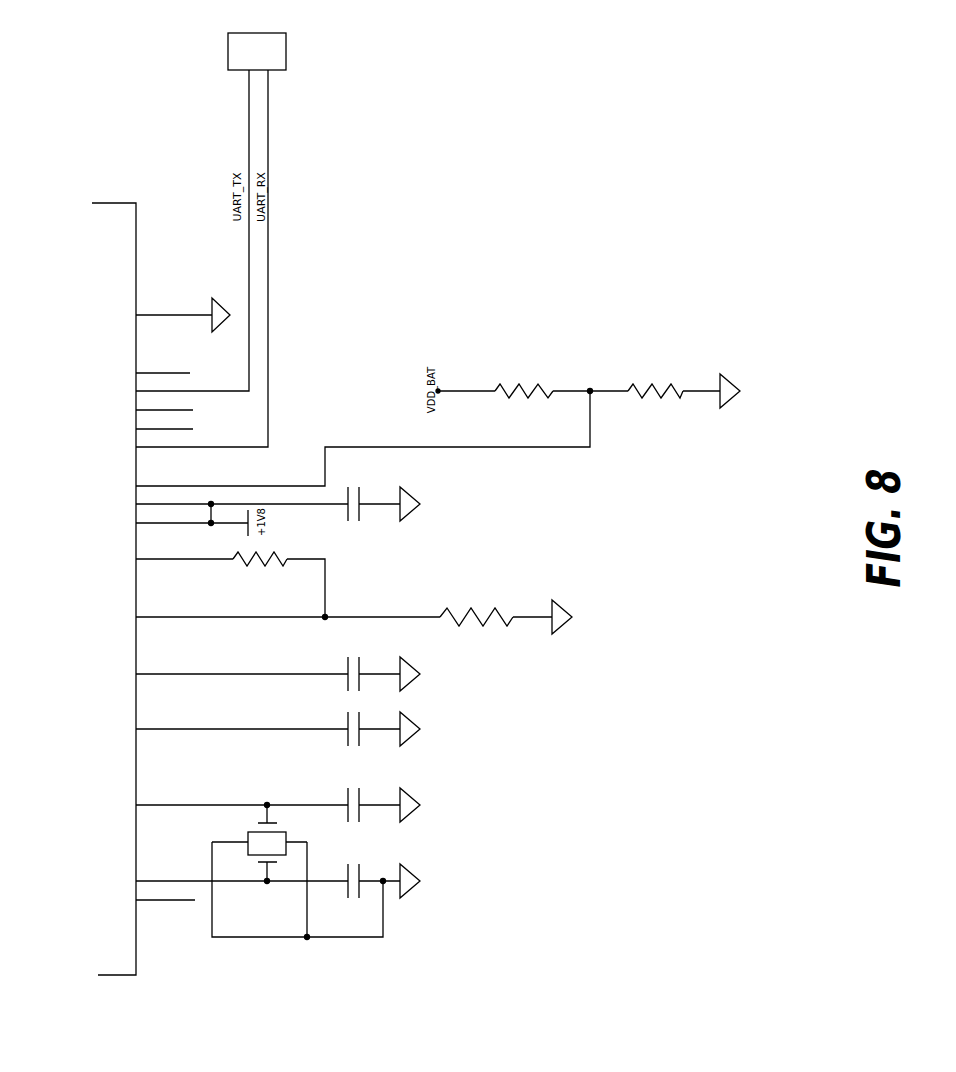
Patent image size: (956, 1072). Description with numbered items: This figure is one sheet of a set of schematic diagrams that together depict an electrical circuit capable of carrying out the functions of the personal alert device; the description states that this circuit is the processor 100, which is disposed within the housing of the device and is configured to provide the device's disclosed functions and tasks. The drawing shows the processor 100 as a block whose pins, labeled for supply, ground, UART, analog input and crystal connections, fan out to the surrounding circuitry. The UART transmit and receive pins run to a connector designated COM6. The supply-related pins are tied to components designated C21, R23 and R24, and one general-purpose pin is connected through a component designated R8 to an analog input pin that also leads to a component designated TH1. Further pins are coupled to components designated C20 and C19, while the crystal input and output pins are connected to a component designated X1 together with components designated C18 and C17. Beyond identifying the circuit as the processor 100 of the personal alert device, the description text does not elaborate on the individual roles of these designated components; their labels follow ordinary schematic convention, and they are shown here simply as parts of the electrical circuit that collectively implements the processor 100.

The processor 100 is at (295, 522).
The UART connector COM6 is at (241, 59).
The capacitor C21 is at (373, 492).
The resistor R23 is at (524, 363).
The resistor R24 is at (655, 363).
The resistor R8 is at (260, 576).
The thermistor TH1 is at (476, 618).
The capacitor C20 is at (373, 663).
The capacitor C19 is at (373, 720).
The capacitor C18 is at (373, 797).
The capacitor C17 is at (373, 873).
The crystal X1 is at (291, 871).